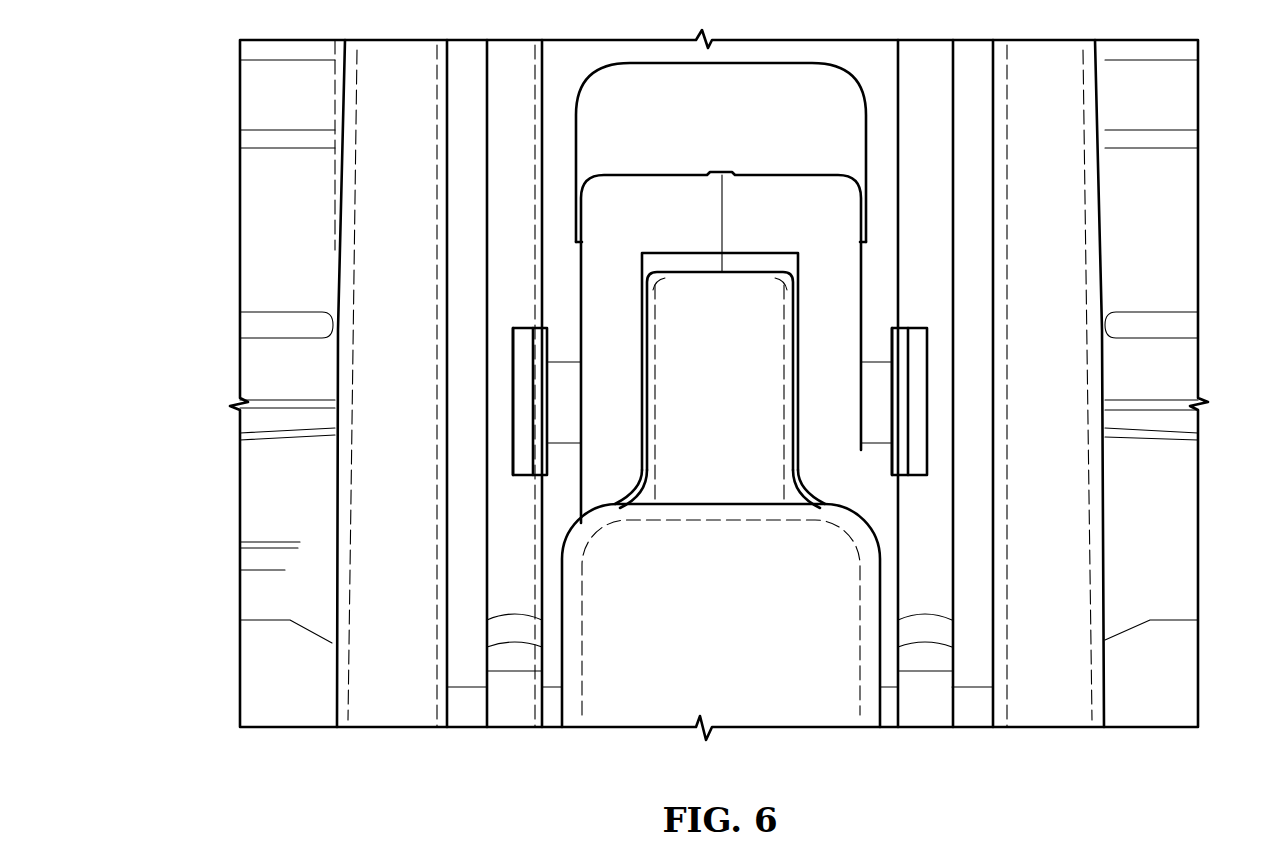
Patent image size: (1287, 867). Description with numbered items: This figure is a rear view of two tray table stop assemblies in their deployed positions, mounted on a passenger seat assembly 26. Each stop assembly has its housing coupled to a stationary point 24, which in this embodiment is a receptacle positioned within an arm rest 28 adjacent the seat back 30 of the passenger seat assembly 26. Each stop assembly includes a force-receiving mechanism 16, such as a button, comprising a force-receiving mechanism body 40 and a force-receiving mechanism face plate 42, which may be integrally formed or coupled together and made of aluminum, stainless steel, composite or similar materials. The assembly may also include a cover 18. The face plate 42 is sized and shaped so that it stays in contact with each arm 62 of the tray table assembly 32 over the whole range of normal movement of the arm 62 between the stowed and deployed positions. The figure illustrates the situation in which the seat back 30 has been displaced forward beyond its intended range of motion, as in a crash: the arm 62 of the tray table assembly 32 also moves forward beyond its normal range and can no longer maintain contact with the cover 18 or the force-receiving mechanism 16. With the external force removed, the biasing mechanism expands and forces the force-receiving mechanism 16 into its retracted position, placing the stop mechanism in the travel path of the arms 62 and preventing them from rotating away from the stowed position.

The passenger seat assembly 26 is at (208, 70).
The arm 62 is at (487, 83).
The arm rest 28 is at (722, 65).
The force-receiving mechanism body 40 is at (565, 362).
The force-receiving mechanism face plate 42 is at (540, 328).
The cover 18 is at (513, 397).
The force-receiving mechanism 16 is at (533, 415).
The stationary point 24 is at (861, 420).
The seat back 30 is at (333, 567).
The tray table assembly 32 is at (523, 671).